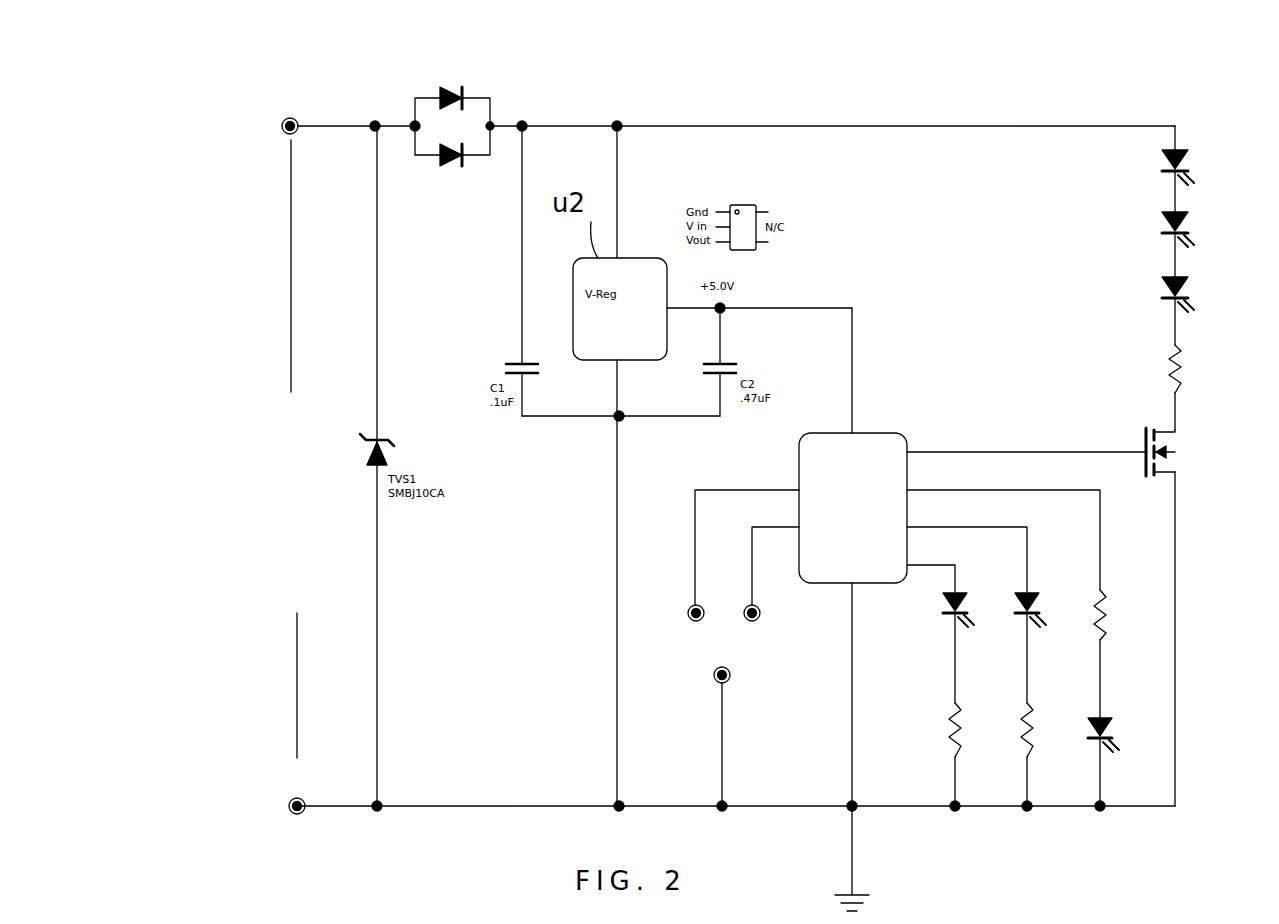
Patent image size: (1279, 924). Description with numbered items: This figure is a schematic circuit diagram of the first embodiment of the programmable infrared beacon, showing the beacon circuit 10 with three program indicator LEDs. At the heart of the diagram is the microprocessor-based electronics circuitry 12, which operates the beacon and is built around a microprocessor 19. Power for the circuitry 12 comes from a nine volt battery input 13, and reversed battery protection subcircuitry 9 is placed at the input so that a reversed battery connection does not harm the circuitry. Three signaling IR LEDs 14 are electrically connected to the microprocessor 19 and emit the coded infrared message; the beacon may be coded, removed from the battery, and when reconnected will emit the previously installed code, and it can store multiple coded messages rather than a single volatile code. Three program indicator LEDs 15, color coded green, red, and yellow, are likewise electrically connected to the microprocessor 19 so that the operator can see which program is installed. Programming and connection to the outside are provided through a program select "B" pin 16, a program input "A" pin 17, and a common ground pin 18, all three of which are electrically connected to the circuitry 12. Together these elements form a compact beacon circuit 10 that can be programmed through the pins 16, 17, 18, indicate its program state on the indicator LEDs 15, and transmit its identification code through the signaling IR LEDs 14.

The reversed battery protection subcircuitry 9 is at (364, 55).
The beacon circuit 10 is at (972, 232).
The microprocessor-based electronics circuitry 12 is at (1090, 100).
The 9 volt battery input 13 is at (247, 515).
The signaling IR LEDs 14 is at (1197, 164).
The program indicator LEDs 15 is at (960, 598).
The program select "B" pin 16 is at (796, 628).
The program input "A" pin 17 is at (686, 628).
The common ground pin 18 is at (713, 686).
The microprocessor 19 is at (868, 445).